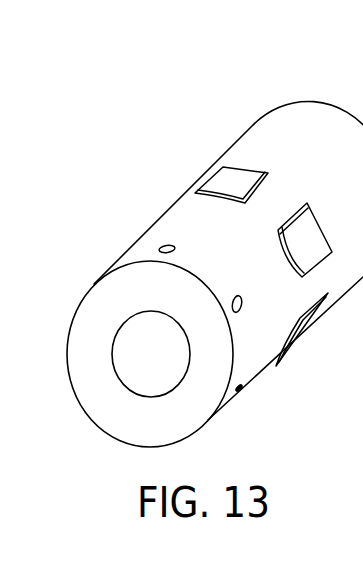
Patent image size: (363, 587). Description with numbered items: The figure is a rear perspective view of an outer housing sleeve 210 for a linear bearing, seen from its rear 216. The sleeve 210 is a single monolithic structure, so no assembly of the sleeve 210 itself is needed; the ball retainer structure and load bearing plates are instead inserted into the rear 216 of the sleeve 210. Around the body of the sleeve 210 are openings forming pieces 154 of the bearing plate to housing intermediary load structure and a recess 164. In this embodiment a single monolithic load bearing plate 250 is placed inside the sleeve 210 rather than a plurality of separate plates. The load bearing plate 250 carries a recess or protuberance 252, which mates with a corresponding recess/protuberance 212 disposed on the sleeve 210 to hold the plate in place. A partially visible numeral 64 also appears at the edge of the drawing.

The sleeve 210 is at (0, 94).
The monolithic load bearing plate 250 is at (115, 305).
The rear 216 is at (115, 398).
The pieces of bearing plate to housing intermediary load structure 154 is at (160, 174).
The recess 164 is at (235, 183).
The recess or protuberance 252 is at (271, 375).
The recess/protuberance 212 is at (245, 304).
The opening (partially shown) 64 is at (14, 371).